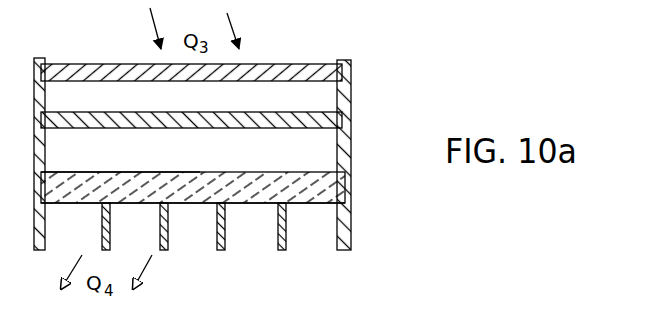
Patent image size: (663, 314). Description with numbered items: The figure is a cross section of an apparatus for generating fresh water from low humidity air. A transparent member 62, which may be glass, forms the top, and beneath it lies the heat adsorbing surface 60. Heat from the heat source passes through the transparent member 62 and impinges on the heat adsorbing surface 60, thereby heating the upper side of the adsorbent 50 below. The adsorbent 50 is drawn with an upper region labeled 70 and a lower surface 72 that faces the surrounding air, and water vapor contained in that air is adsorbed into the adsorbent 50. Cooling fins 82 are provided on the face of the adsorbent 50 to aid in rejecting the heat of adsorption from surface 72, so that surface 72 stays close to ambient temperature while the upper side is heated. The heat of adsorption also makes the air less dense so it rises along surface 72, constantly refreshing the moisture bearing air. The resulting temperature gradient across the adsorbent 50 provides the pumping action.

The transparent member 62 is at (316, 64).
The heat adsorbing surface 60 is at (316, 109).
The adsorbent 50 is at (315, 172).
The upper surface of base plate 70 is at (70, 172).
The surface of adsorbent 72 is at (70, 204).
The cooling fins 82 is at (282, 250).